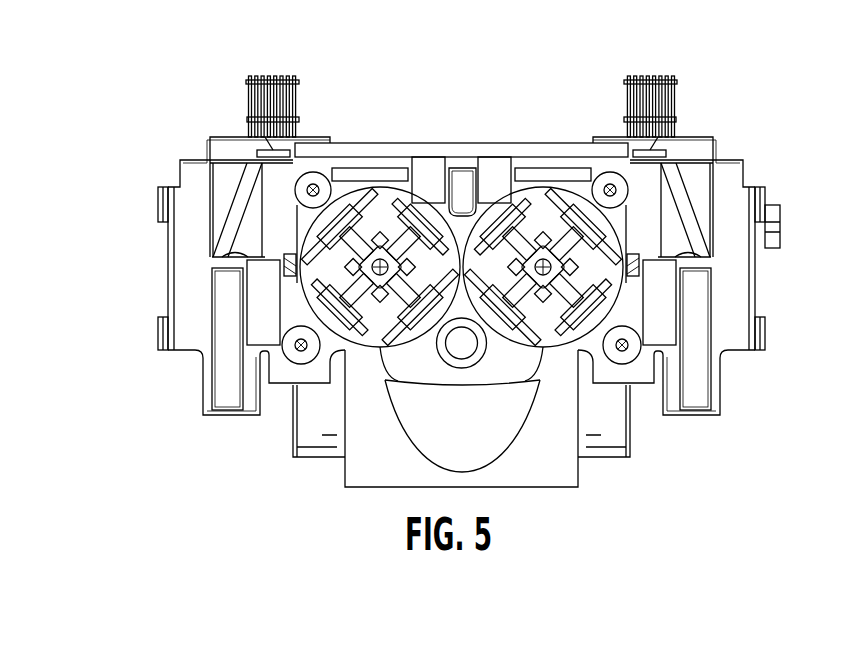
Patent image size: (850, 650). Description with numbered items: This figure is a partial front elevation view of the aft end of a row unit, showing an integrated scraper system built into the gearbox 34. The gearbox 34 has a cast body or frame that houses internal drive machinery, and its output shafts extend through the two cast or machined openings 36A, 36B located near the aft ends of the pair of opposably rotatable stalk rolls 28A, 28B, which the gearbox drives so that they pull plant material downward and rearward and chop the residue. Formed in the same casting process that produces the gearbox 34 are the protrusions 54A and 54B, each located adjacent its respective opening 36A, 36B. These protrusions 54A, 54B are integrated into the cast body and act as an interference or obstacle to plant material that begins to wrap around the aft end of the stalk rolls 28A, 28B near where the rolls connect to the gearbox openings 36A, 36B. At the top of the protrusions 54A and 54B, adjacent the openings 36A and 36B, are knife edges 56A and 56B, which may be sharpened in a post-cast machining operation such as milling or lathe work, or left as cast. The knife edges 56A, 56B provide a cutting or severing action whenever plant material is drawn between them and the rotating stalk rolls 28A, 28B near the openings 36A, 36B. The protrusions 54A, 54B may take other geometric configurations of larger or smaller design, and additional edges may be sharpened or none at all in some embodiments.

The gearbox 34 is at (733, 178).
The stalk roll 28A is at (405, 198).
The stalk roll 28B is at (556, 195).
The opening 36A is at (350, 330).
The opening 36B is at (586, 335).
The protrusion 54A is at (290, 262).
The protrusion 54B is at (640, 260).
The knife edge 56A is at (291, 262).
The knife edge 56B is at (633, 256).